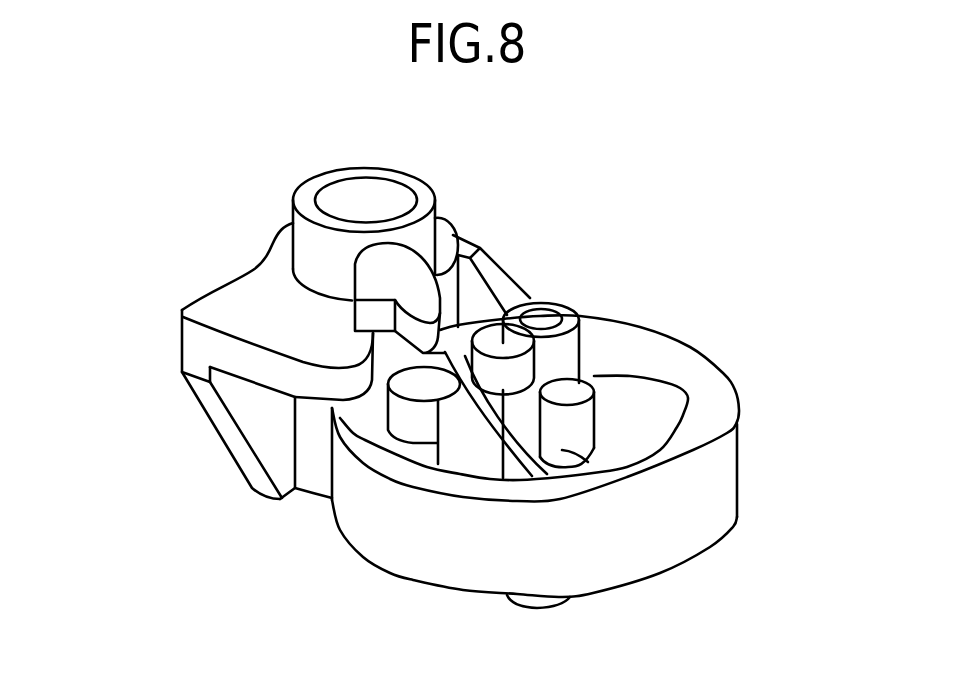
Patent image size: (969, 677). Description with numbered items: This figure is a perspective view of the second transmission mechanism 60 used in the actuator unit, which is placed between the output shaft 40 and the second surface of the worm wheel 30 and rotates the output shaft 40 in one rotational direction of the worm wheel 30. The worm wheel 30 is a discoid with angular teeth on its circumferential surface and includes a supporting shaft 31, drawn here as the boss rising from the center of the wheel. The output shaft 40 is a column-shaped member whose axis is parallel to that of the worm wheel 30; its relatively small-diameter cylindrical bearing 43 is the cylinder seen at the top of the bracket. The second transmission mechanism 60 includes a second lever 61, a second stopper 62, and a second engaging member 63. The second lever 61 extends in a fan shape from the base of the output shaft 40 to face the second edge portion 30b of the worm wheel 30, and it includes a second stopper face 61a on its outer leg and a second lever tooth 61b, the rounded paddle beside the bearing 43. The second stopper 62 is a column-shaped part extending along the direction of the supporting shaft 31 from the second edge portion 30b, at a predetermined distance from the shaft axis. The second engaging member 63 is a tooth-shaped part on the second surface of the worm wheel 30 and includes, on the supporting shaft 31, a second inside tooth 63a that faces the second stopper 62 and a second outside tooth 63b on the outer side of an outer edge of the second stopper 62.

The worm wheel 30 is at (712, 573).
The second edge portion 30b is at (712, 426).
The supporting shaft 31 is at (563, 310).
The output shaft 40 is at (235, 263).
The cylindrical bearing 43 is at (408, 181).
The second transmission mechanism 60 is at (622, 294).
The second lever 61 is at (166, 371).
The second stopper face 61a is at (311, 383).
The second lever tooth 61b is at (430, 296).
The second stopper 62 is at (408, 420).
The second engaging member 63 is at (658, 370).
The second inside tooth 63a is at (583, 396).
The second outside tooth 63b is at (513, 370).